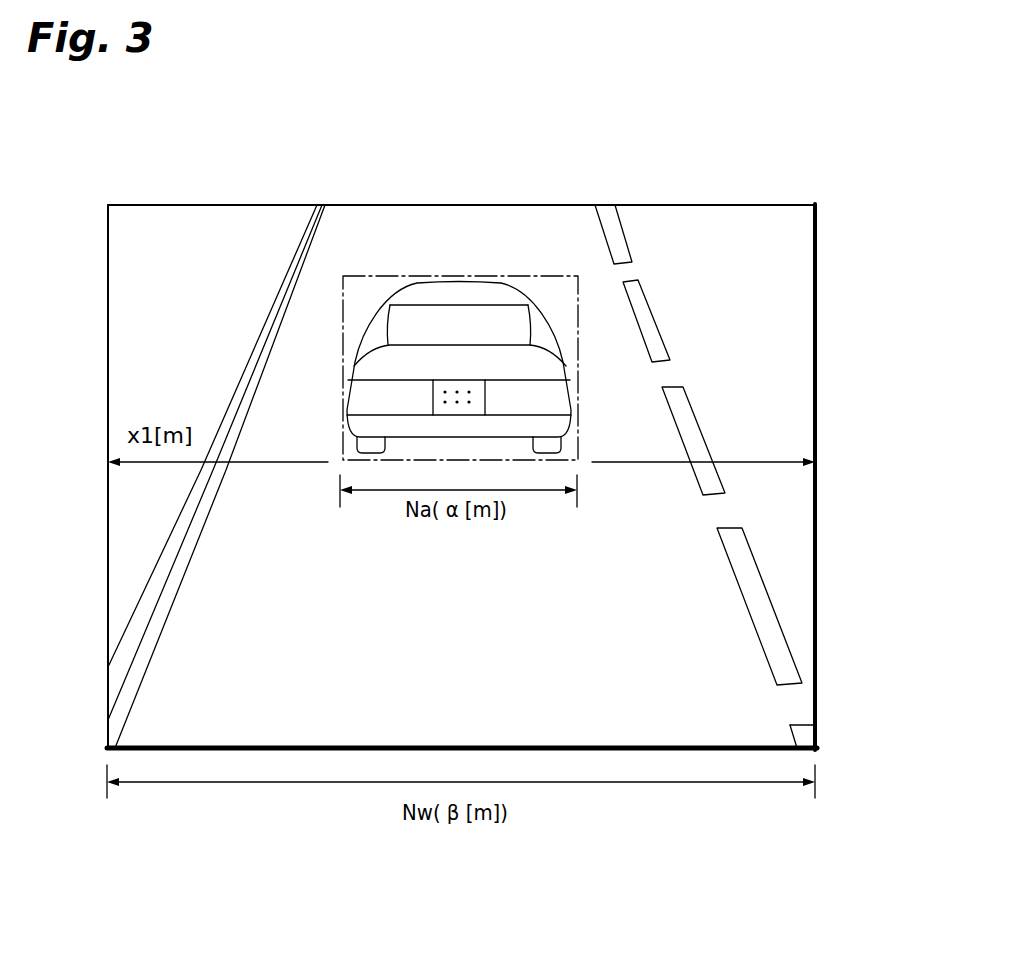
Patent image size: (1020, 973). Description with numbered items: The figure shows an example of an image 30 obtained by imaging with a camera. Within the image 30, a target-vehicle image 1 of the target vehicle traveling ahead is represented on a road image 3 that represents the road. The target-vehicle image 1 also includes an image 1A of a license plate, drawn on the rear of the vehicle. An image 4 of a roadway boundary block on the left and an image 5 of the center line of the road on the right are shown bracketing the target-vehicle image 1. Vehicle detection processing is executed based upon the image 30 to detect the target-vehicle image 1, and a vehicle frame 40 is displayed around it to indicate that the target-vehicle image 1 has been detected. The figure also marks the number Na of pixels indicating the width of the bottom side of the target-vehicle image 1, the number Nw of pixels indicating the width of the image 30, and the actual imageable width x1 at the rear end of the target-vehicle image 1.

The target-vehicle image 1 is at (459, 333).
The image of a license plate 1A is at (458, 388).
The road image 3 is at (496, 476).
The image of a roadway boundary block 4 is at (165, 600).
The image of the center line of the road 5 is at (610, 235).
The image 30 is at (792, 322).
The vehicle frame 40 is at (578, 348).